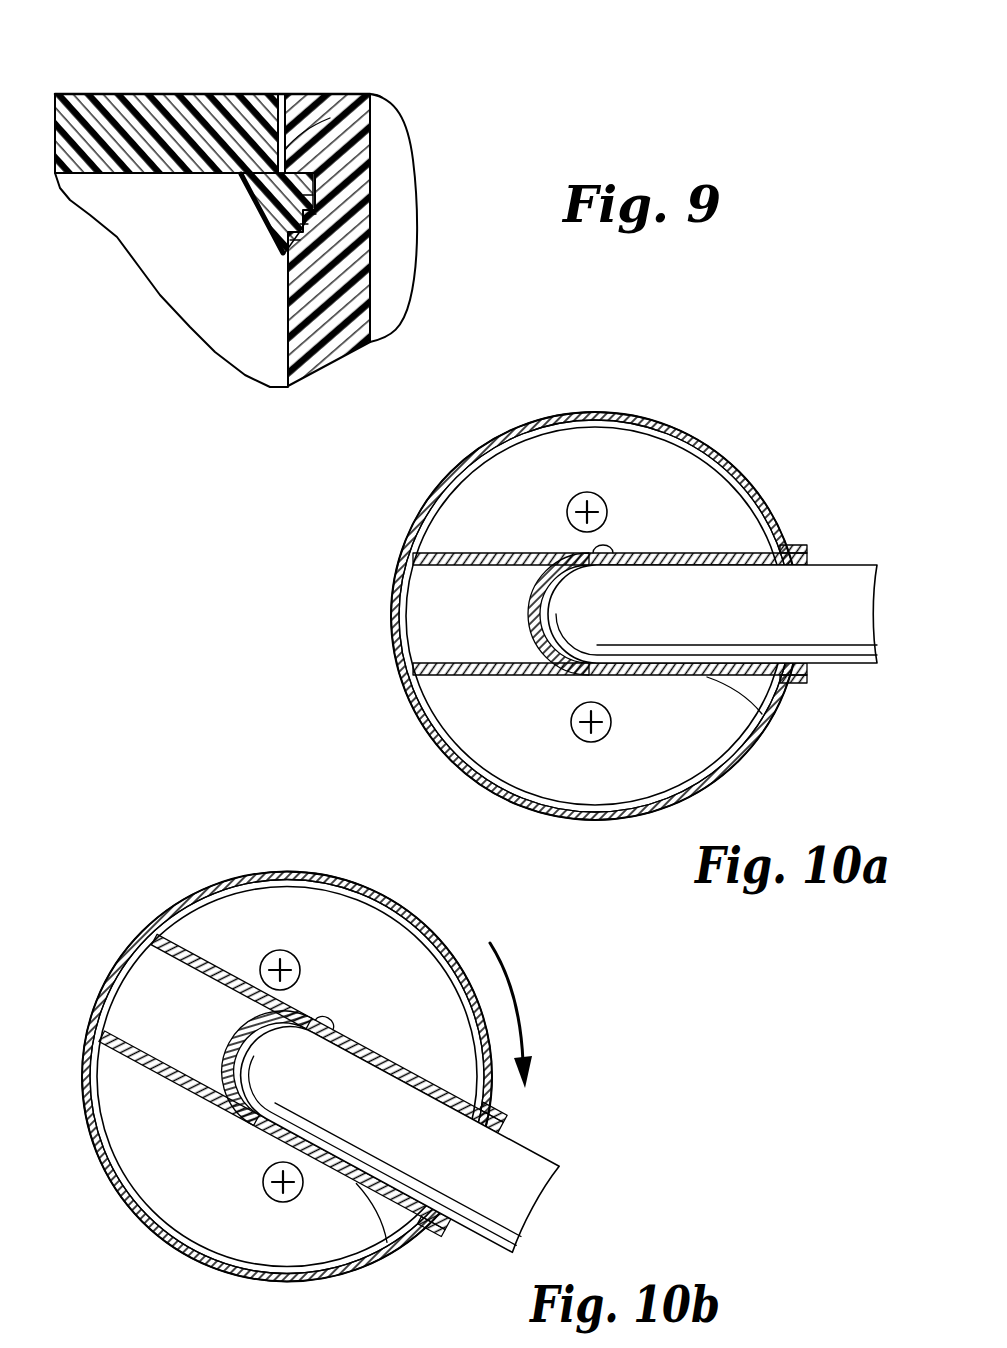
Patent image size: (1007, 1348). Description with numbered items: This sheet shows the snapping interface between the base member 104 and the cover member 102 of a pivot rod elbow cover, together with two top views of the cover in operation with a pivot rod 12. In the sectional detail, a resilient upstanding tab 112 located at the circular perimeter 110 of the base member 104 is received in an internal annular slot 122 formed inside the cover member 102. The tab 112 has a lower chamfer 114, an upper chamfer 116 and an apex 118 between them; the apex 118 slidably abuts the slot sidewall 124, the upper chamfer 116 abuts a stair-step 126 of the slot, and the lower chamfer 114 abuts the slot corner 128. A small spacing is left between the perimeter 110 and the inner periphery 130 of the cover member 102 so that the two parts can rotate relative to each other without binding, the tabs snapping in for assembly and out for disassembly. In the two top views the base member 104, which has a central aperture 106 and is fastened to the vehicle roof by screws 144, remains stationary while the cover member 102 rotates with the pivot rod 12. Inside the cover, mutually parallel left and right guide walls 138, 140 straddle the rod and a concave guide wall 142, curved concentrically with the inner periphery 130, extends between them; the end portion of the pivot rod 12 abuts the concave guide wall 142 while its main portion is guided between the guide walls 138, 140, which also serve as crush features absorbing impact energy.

In FIG. 10A, the pivot rod 12 is at (851, 556).
In FIG. 10B, the pivot rod 12 is at (540, 1150).
In FIG. 9, the cover member 102 is at (380, 300).
In FIG. 10A, the cover member 102 is at (398, 522).
In FIG. 10B, the cover member 102 is at (228, 866).
In FIG. 9, the base member 104 is at (174, 86).
In FIG. 10A, the base member 104 is at (470, 707).
In FIG. 10B, the base member 104 is at (375, 925).
In FIG. 10A, the central aperture 106 is at (607, 548).
In FIG. 10B, the central aperture 106 is at (327, 1018).
In FIG. 9, the circular perimeter 110 is at (283, 143).
In FIG. 10A, the resilient upstanding tabs 112 is at (650, 418).
In FIG. 10B, the resilient upstanding tabs 112 is at (287, 1077).
In FIG. 9, the lower chamfer 114 is at (383, 94).
In FIG. 9, the upper chamfer 116 is at (360, 259).
In FIG. 9, the apex 118 is at (318, 222).
In FIG. 9, the internal annular slot 122 is at (257, 208).
In FIG. 9, the slot sidewall 124 is at (308, 192).
In FIG. 9, the stair-step 126 is at (318, 213).
In FIG. 9, the slot corner 128 is at (300, 185).
In FIG. 9, the inner periphery 130 is at (280, 112).
In FIG. 10A, the left guide wall 138 is at (762, 714).
In FIG. 10B, the left guide wall 138 is at (360, 1197).
In FIG. 10A, the right guide wall 140 is at (700, 553).
In FIG. 10B, the right guide wall 140 is at (367, 1048).
In FIG. 10A, the concave guide wall 142 is at (528, 606).
In FIG. 10B, the concave guide wall 142 is at (230, 1040).
In FIG. 10A, the screws 144 is at (584, 492).
In FIG. 10B, the screws 144 is at (282, 950).